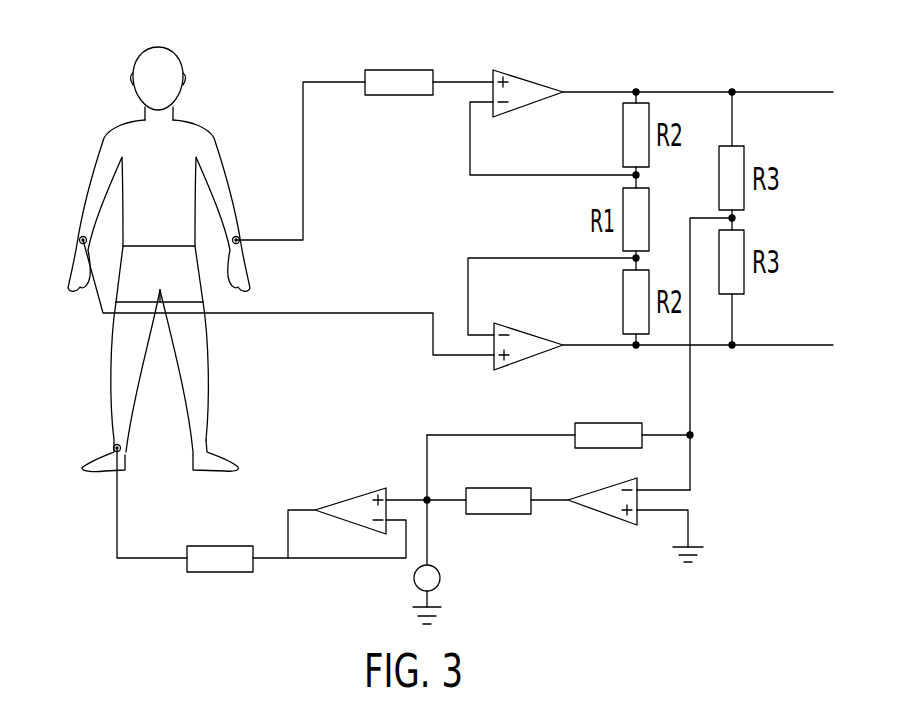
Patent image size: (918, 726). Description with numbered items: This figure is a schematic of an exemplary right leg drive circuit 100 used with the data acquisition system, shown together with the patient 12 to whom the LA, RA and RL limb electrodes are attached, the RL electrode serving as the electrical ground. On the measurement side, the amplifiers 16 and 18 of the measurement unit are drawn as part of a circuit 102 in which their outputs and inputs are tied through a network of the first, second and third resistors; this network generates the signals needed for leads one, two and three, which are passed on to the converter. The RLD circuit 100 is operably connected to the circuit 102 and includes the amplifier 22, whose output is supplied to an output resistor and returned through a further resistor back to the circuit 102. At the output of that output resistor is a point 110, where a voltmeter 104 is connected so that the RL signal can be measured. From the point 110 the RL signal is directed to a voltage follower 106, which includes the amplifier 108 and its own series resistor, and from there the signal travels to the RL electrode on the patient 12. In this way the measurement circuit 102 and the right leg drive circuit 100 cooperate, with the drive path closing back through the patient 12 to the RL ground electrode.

The patient 12 is at (110, 82).
The amplifier 16 is at (533, 78).
The amplifier 18 is at (531, 360).
The amplifier 22 is at (606, 512).
The right leg drive circuit 100 is at (536, 582).
The circuit 102 is at (728, 63).
The voltmeter 104 is at (411, 581).
The voltage follower 106 is at (328, 492).
The amplifier 108 is at (380, 487).
The point 110 is at (432, 505).